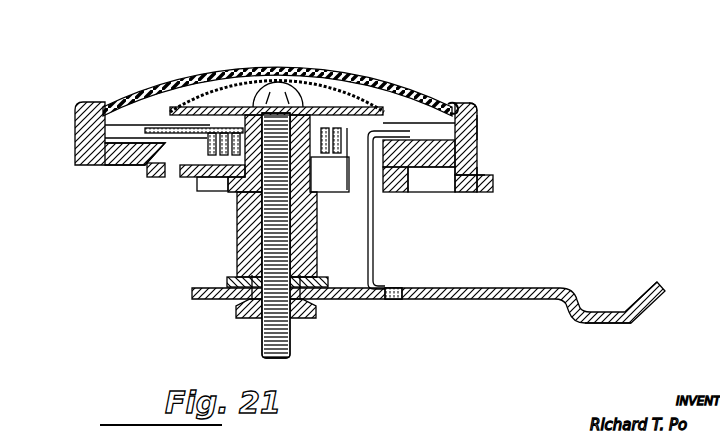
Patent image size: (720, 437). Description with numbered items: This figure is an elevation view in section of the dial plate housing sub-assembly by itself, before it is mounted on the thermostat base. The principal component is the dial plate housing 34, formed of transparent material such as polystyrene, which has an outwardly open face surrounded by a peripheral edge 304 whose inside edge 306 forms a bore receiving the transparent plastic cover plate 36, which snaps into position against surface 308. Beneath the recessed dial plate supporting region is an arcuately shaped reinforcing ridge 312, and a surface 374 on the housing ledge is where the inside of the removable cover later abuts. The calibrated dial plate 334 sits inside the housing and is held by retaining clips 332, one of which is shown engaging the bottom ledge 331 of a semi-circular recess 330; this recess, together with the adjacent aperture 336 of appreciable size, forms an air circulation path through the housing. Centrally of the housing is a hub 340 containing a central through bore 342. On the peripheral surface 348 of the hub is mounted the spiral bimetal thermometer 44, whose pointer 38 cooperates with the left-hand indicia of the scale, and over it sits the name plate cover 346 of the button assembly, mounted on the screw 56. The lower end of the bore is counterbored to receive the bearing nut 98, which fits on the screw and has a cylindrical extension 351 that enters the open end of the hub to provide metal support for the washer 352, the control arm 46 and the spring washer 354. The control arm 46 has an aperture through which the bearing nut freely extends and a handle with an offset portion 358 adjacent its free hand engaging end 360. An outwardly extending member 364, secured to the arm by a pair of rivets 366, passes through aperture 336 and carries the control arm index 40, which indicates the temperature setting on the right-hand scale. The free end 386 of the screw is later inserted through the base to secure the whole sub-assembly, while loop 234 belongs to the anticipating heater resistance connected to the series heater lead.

The dial plate housing 34 is at (480, 130).
The transparent cover plate 36 is at (151, 88).
The pointer 38 is at (152, 125).
The control arm index 40 is at (396, 130).
The bimetal thermometer 44 is at (324, 158).
The control arm 46 is at (192, 291).
The screw 56 is at (316, 210).
The bearing nut 98 is at (238, 318).
The loop 234 is at (494, 187).
The peripheral edge 304 is at (481, 104).
The inside edge 306 is at (460, 108).
The surface 308 is at (451, 104).
The reinforcing ridge 312 is at (410, 192).
The semi-circular recess 330 is at (147, 170).
The bottom ledge 331 is at (135, 154).
The retaining clip 332 is at (170, 176).
The dial plate 334 is at (75, 140).
The aperture 336 is at (381, 193).
The hub 340 is at (240, 205).
The central through bore 342 is at (237, 240).
The name plate cover 346 is at (244, 78).
The peripheral surface 348 is at (316, 108).
The cylindrical extension 351 is at (303, 273).
The washer 352 is at (227, 278).
The spring washer 354 is at (236, 304).
The offset portion 358 is at (601, 325).
The free hand engaging end 360 is at (663, 303).
The outwardly extending member 364 is at (374, 240).
The rivet 366 is at (397, 300).
The surface 374 is at (484, 173).
The free end 386 is at (292, 350).